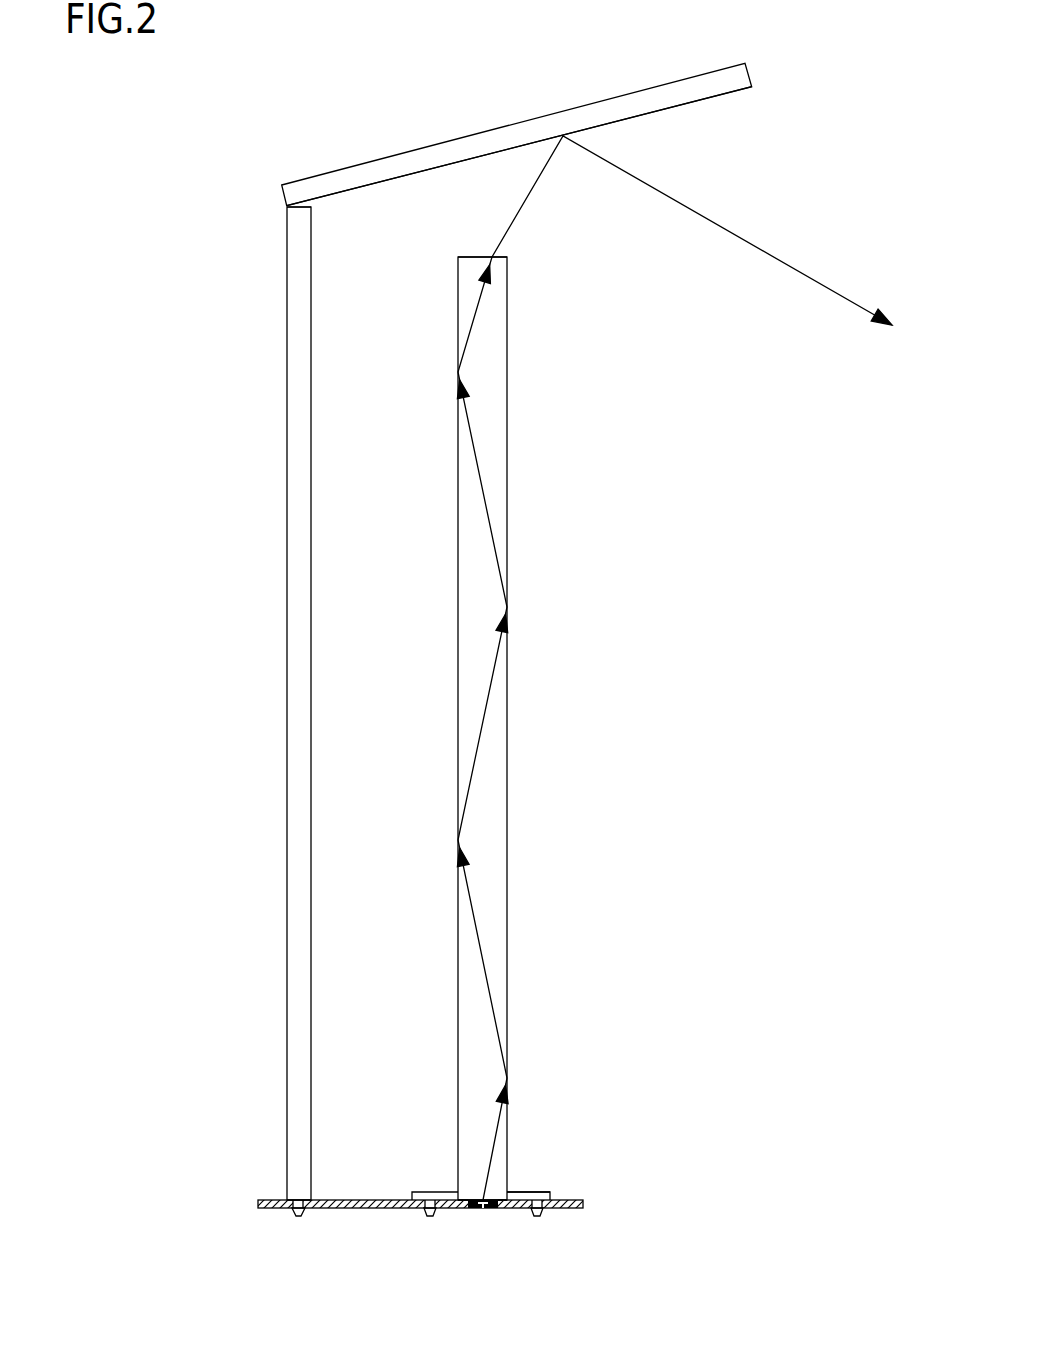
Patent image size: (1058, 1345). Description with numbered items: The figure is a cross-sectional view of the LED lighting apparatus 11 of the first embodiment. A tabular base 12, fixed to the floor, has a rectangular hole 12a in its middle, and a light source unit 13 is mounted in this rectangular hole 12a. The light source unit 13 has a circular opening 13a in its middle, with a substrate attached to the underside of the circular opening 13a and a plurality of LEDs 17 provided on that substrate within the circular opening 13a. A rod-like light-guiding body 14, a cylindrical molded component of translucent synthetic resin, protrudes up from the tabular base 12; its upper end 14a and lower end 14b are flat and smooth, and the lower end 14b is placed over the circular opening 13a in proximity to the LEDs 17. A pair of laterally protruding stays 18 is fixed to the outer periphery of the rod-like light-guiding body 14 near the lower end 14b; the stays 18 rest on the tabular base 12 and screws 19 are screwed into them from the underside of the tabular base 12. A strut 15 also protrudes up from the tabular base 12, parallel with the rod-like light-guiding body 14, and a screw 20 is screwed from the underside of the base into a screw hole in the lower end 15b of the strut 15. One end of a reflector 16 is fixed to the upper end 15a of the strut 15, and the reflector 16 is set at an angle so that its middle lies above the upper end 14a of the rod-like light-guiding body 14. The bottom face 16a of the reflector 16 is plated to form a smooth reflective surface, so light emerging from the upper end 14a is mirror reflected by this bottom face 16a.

The LED lighting apparatus 11 is at (336, 75).
The tabular base 12 is at (572, 1200).
The rectangular hole 12a is at (504, 1200).
The light source unit 13 is at (470, 1213).
The circular opening 13a is at (470, 1200).
The rod-like light-guiding body 14 is at (507, 767).
The upper end of the rod-like light-guiding body 14a is at (503, 257).
The lower end of the rod-like light-guiding body 14b is at (497, 1213).
The strut 15 is at (287, 578).
The upper end of the strut 15a is at (288, 222).
The lower end of the strut 15b is at (297, 1187).
The reflector 16 is at (440, 142).
The bottom face of the reflector 16a is at (693, 105).
The LEDs 17 is at (487, 1213).
The stays 18 is at (545, 1192).
The screws 19 is at (537, 1212).
The screw 20 is at (298, 1216).